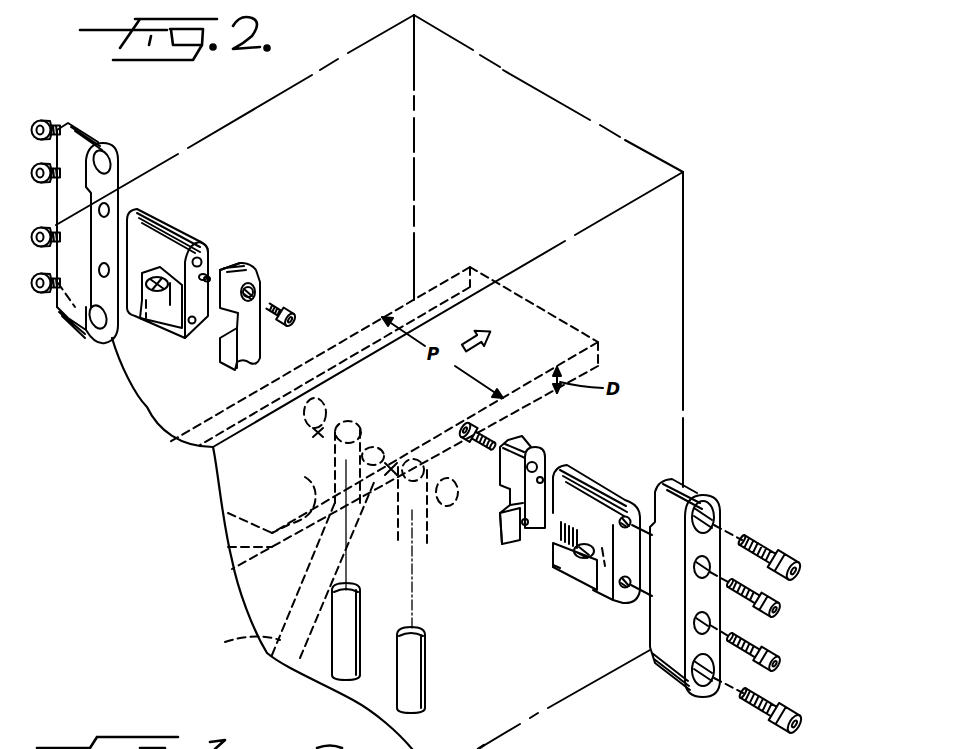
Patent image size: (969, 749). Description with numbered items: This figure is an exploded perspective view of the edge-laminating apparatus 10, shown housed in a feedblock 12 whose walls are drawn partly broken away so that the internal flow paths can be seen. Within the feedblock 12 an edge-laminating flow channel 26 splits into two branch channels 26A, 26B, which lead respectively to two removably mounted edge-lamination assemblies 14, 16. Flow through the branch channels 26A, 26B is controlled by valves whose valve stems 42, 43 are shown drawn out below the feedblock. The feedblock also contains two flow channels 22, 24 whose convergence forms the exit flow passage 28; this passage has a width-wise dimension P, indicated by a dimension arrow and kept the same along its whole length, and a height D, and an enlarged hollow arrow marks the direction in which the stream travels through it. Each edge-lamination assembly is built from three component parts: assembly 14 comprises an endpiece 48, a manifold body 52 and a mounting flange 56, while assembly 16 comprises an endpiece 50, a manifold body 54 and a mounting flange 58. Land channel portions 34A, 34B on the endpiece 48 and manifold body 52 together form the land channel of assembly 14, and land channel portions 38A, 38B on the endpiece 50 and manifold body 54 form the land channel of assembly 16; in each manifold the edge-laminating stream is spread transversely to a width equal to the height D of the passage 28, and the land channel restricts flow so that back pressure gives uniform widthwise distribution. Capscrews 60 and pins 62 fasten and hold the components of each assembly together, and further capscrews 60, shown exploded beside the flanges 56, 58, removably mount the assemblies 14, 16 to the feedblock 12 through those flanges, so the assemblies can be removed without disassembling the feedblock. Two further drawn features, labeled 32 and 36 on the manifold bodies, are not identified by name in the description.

The edge-laminating apparatus 10 is at (392, 285).
The feedblock 12 is at (650, 151).
The edge-lamination assembly 14 is at (218, 228).
The edge-lamination assembly 16 is at (585, 456).
The flow channel 22 is at (228, 532).
The flow channel 24 is at (232, 588).
The edge-laminating flow channel 26 is at (236, 644).
The channel 26A is at (312, 437).
The channel 26B is at (423, 443).
The flow passage 28 is at (294, 498).
The clamp jaw 32 is at (143, 320).
The land channel portion 34A is at (220, 330).
The land channel portion 34B is at (155, 300).
The clamp jaw 36 is at (582, 553).
The land channel portion 38A is at (502, 497).
The land channel portion 38B is at (557, 530).
The valve stem 42 is at (361, 592).
The valve stem 43 is at (427, 633).
The endpiece 48 is at (192, 318).
The endpiece 50 is at (532, 443).
The manifold body 52 is at (158, 230).
The manifold body 54 is at (605, 478).
The mounting flange 56 is at (100, 130).
The mounting flange 58 is at (696, 487).
The capscrews 60 is at (48, 120).
The pins 62 is at (208, 276).